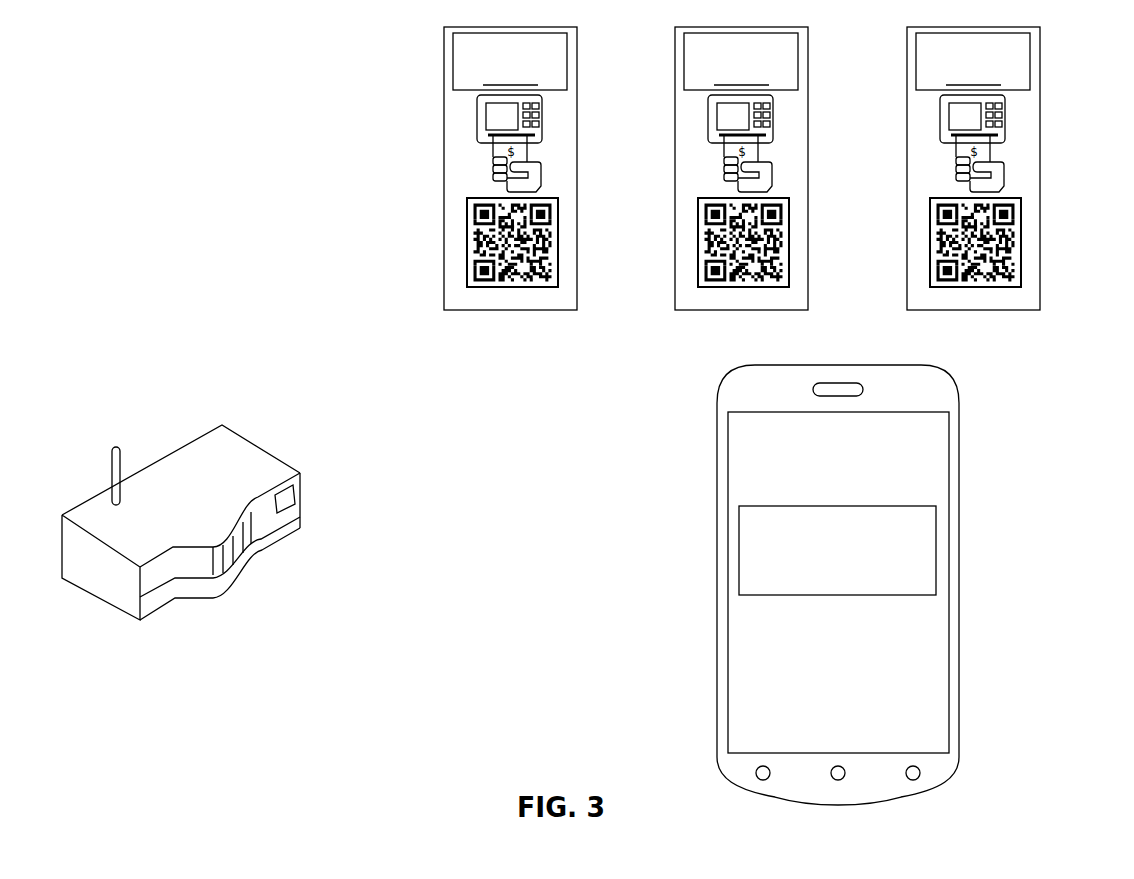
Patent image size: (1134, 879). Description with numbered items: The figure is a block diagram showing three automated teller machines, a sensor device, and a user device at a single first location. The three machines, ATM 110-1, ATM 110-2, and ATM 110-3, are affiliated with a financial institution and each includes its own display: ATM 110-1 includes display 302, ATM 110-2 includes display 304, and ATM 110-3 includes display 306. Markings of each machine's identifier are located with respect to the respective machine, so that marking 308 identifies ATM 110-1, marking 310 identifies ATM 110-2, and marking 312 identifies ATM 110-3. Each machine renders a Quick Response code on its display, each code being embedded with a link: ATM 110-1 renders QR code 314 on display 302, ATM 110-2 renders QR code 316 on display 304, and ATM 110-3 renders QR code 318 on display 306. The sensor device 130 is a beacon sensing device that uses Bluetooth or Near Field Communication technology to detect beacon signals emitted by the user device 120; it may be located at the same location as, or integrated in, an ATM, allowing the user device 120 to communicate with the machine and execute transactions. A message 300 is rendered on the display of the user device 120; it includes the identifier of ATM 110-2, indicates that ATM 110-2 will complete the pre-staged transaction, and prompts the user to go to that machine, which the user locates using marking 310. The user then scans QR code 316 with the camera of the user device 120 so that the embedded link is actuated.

The ATM 110-1 is at (510, 61).
The ATM 110-2 is at (741, 61).
The ATM 110-3 is at (973, 61).
The user device 120 is at (828, 585).
The sensor device 130 is at (158, 460).
The message 300 is at (948, 543).
The display 302 is at (483, 294).
The display 304 is at (714, 294).
The display 306 is at (946, 294).
The marking 308 is at (504, 190).
The marking 310 is at (735, 190).
The marking 312 is at (967, 190).
The QR code 314 is at (548, 236).
The QR code 316 is at (779, 236).
The QR code 318 is at (1011, 236).